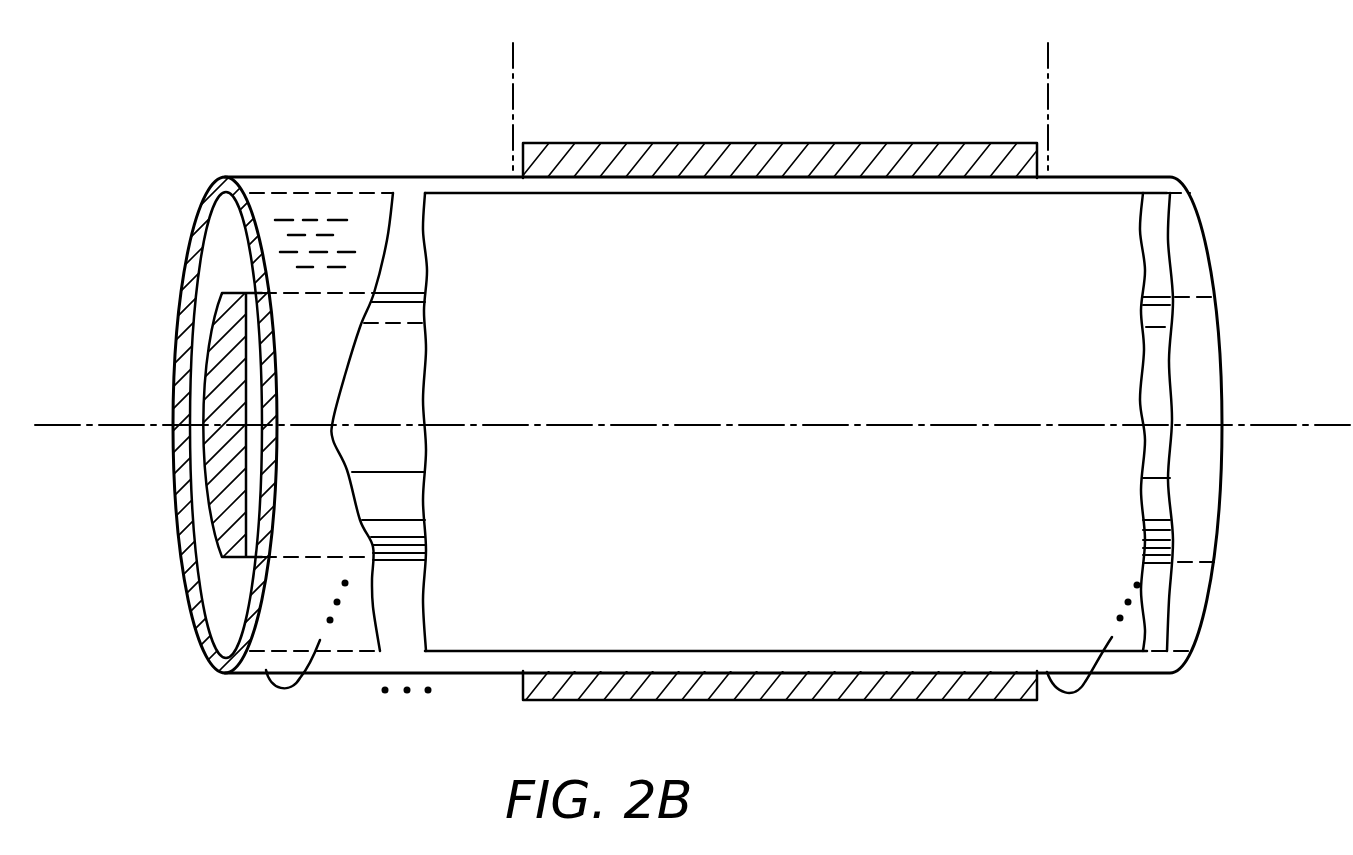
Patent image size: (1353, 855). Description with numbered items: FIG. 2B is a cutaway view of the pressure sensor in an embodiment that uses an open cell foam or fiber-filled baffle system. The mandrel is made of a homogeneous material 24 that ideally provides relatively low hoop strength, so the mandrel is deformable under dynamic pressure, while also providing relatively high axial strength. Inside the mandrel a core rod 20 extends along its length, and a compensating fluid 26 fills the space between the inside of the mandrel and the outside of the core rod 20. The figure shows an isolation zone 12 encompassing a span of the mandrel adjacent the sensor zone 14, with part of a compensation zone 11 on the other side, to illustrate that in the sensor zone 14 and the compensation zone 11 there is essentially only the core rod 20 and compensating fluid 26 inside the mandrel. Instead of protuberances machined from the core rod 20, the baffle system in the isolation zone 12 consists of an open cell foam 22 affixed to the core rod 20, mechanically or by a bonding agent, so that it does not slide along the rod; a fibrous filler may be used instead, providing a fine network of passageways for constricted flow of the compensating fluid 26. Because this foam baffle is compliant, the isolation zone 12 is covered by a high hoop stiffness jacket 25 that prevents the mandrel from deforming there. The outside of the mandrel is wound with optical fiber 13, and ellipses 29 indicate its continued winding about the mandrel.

The compensation zone 11 is at (1108, 175).
The isolation zone 12 is at (782, 416).
The optical fiber 13 is at (297, 683).
The sensor zone 14 is at (357, 158).
The core rod 20 is at (408, 380).
The open cell foam 22 is at (728, 494).
The homogeneous material 24 is at (197, 237).
The high hoop stiffness jacket 25 is at (783, 150).
The compensating fluid 26 is at (287, 220).
The ellipses 29 is at (337, 587).